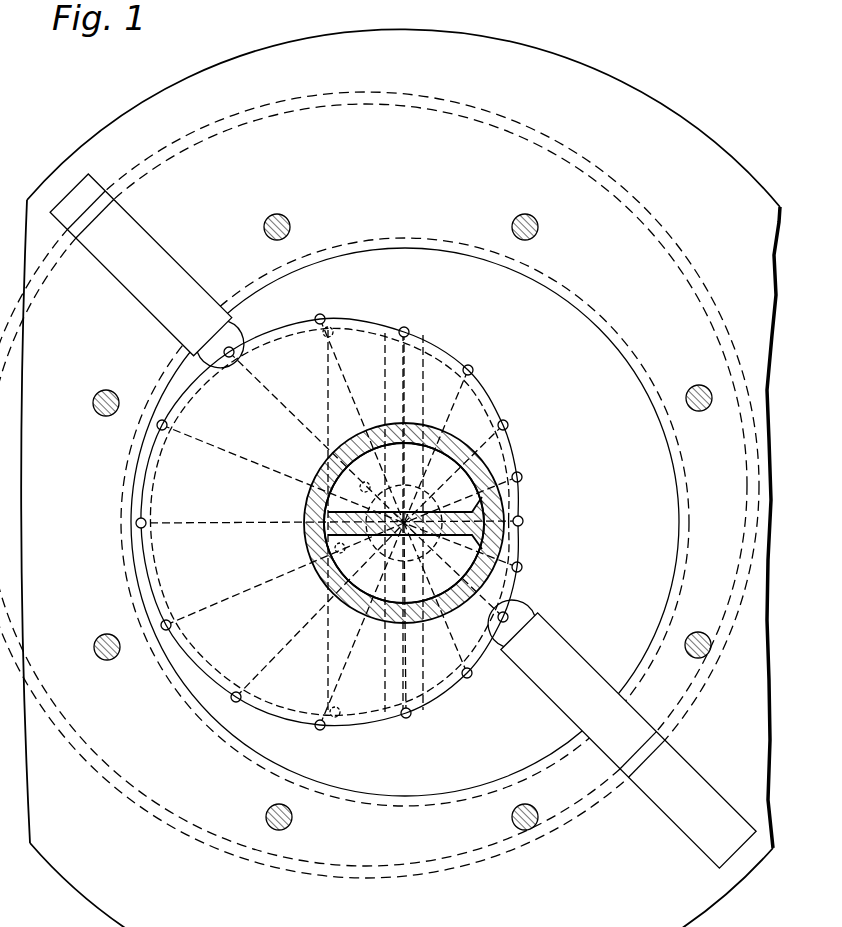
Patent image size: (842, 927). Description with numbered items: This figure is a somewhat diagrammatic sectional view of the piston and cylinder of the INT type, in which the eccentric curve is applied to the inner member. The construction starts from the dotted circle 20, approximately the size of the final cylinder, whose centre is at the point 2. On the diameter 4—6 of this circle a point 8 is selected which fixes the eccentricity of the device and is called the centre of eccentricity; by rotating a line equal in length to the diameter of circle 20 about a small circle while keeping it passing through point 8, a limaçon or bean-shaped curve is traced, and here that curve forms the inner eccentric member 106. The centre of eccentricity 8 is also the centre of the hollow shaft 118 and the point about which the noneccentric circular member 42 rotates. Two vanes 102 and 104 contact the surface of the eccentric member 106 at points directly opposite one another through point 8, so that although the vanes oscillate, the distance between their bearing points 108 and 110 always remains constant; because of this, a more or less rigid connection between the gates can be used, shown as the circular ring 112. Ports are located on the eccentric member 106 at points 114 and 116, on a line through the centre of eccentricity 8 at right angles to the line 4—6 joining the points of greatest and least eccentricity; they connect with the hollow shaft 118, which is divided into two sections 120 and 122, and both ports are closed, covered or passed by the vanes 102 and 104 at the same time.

The centre 2 is at (400, 478).
The diameter end point 4 is at (146, 519).
The diameter end point 6 is at (524, 521).
The centre of eccentricity 8 is at (404, 513).
The circle 20 is at (352, 333).
The noneccentric circular member 42 is at (590, 312).
The vane 102 is at (152, 257).
The vane 104 is at (546, 677).
The eccentric member 106 is at (505, 405).
The vane bearing point 108 is at (252, 326).
The vane bearing point 110 is at (506, 616).
The ring 112 is at (493, 114).
The port 114 is at (416, 338).
The port 116 is at (411, 714).
The hollow shaft 118 is at (506, 497).
The shaft section 120 is at (473, 472).
The shaft section 122 is at (473, 555).